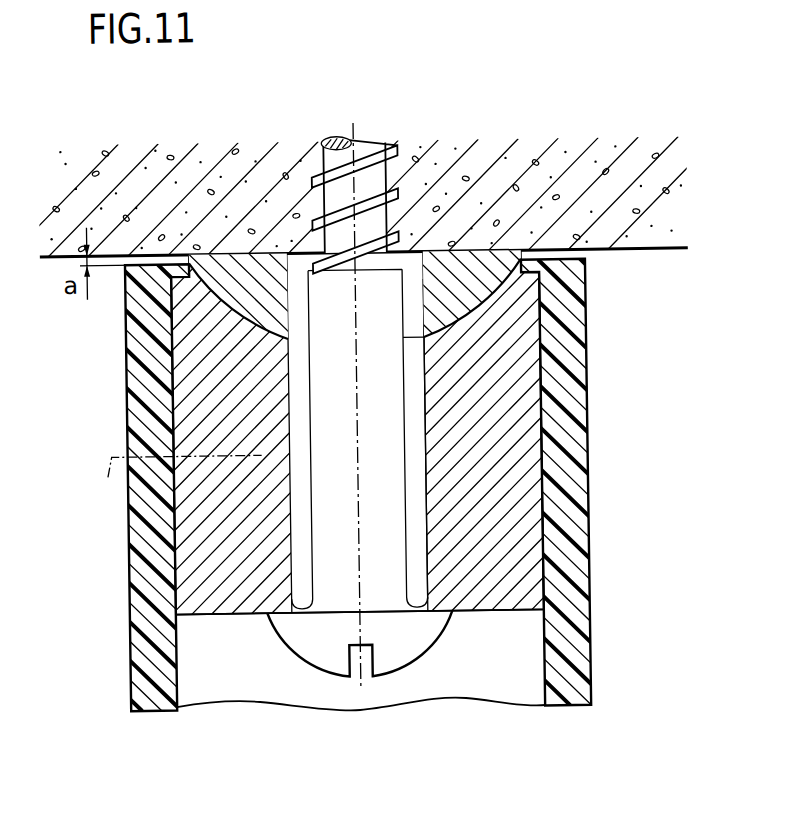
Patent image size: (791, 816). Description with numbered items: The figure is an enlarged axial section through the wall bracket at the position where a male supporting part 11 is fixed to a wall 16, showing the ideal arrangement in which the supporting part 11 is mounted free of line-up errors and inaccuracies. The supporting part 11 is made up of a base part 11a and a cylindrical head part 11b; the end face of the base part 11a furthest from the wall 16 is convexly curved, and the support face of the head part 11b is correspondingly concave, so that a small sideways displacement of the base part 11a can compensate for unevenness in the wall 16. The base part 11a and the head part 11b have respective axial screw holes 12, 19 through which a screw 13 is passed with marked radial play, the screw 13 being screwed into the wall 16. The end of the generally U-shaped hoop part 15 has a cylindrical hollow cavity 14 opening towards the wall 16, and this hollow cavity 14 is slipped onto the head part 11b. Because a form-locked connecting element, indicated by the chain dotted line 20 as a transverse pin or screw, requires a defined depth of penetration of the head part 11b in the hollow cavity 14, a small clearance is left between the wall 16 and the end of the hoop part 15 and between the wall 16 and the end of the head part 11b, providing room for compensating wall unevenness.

The male supporting part 11 is at (535, 244).
The base part 11a is at (434, 303).
The head part 11b is at (516, 410).
The axial screw hole 12 is at (302, 327).
The screw 13 is at (333, 594).
The hollow cavity 14 is at (513, 675).
The hoop part 15 is at (598, 523).
The wall 16 is at (192, 201).
The axial screw hole 19 is at (417, 598).
The chain dotted line 20 is at (108, 474).